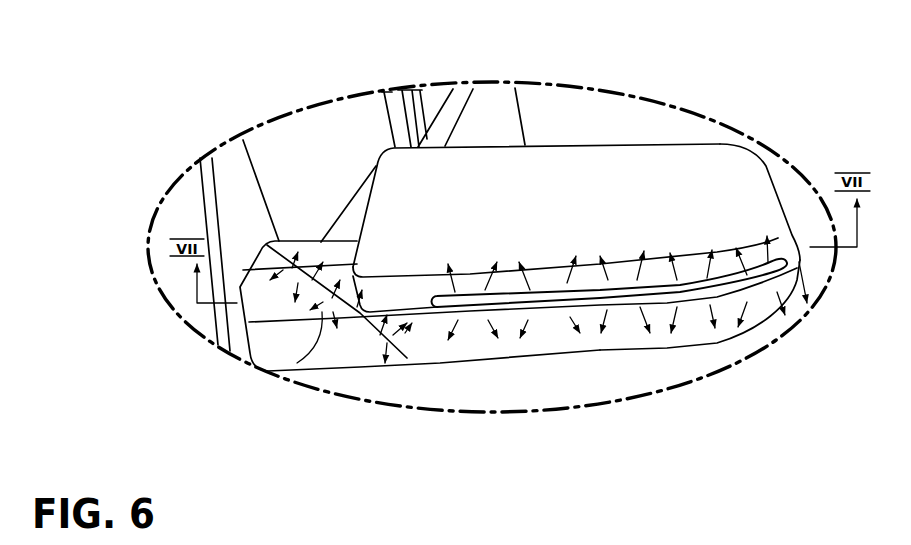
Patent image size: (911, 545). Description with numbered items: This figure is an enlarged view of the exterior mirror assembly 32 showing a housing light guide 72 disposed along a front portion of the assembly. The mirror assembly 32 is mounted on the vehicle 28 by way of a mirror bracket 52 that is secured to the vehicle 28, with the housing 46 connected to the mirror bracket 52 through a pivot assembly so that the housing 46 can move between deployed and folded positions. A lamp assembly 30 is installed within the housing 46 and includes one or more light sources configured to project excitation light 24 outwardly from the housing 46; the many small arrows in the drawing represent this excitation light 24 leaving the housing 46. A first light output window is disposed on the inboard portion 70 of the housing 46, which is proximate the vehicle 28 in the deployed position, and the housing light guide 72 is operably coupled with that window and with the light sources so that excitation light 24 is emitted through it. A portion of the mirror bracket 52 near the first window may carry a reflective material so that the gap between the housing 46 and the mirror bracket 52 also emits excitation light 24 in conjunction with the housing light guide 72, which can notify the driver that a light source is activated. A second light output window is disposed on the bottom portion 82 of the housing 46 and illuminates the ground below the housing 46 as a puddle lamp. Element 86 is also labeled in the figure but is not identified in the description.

The excitation light 24 is at (358, 342).
The vehicle 28 is at (416, 86).
The lamp assembly 30 is at (721, 289).
The mirror assembly 32 is at (640, 140).
The housing 46 is at (693, 178).
The mirror bracket 52 is at (242, 207).
The inboard portion 70 is at (364, 211).
The housing light guide 72 is at (507, 302).
The bottom portion 82 is at (594, 366).
The right side wall 86 is at (792, 211).